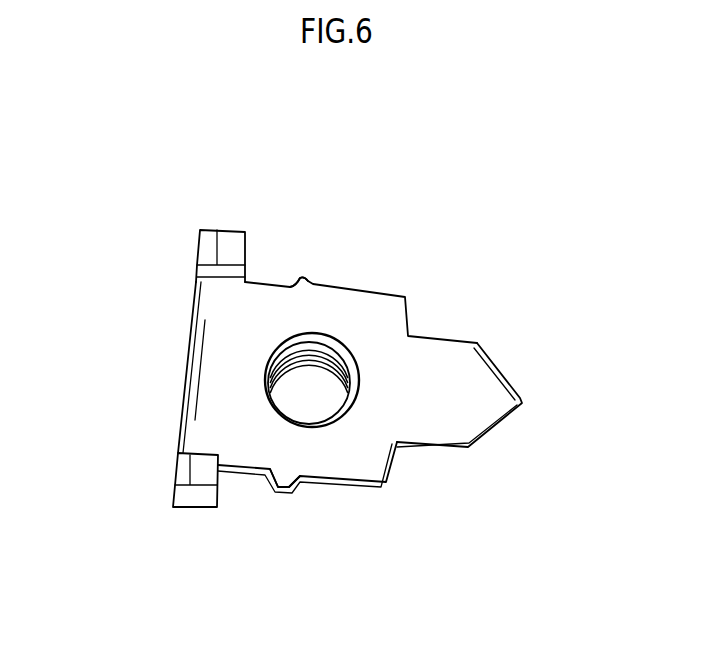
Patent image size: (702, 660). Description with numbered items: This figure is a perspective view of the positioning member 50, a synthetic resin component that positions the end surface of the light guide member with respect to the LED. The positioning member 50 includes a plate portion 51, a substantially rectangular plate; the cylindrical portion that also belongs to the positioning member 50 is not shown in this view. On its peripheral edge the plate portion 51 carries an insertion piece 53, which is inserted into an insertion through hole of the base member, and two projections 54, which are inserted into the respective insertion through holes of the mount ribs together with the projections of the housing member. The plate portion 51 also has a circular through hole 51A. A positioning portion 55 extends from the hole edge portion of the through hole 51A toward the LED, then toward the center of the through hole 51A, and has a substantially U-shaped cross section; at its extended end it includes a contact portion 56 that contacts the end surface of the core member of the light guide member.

The positioning member 50 is at (167, 432).
The plate portion 51 is at (212, 298).
The through hole 51A is at (275, 400).
The insertion piece 53 is at (466, 417).
The projections 54 is at (302, 279).
The positioning portion 55 is at (294, 354).
The contact portion 56 is at (350, 390).